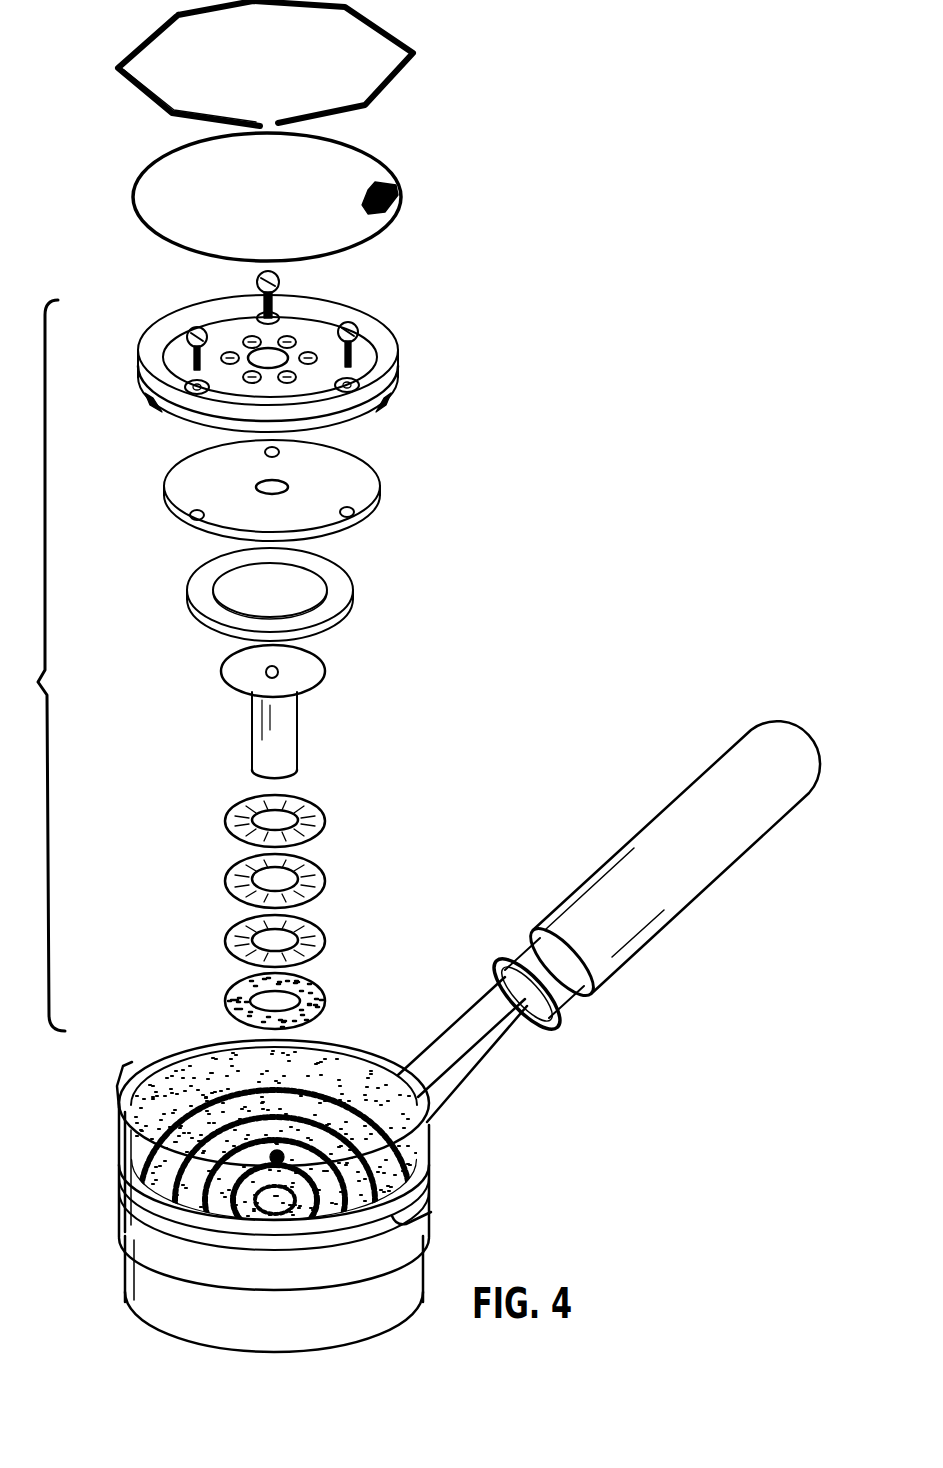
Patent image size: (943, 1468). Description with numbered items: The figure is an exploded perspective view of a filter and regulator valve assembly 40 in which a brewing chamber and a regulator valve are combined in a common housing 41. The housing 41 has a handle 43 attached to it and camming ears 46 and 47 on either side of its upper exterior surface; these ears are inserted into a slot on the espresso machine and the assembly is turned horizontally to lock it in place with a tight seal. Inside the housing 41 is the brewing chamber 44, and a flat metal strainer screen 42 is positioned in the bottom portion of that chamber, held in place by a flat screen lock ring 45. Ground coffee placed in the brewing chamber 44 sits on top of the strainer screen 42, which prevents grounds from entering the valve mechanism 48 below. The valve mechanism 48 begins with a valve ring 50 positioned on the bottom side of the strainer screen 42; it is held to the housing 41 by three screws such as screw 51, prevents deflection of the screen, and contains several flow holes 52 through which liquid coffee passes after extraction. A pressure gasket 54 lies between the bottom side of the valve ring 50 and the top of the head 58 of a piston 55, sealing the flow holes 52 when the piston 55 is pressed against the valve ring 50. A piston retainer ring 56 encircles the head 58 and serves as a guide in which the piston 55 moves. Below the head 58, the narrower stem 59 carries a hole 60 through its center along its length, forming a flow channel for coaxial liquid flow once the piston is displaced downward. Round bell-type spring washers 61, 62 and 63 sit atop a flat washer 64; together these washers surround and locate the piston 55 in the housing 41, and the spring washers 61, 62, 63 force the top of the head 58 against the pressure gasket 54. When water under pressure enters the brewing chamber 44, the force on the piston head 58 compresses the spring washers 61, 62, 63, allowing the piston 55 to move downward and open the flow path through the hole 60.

The filter and regulator valve assembly 40 is at (555, 388).
The housing 41 is at (280, 1180).
The flat metal strainer screen 42 is at (393, 192).
The handle 43 is at (700, 797).
The brewing chamber 44 is at (335, 1084).
The flat screen lock ring 45 is at (410, 52).
The camming ear 46 is at (433, 1177).
The camming ear 47 is at (126, 1093).
The valve mechanism 48 is at (232, 639).
The valve ring 50 is at (300, 340).
The screw 51 is at (279, 275).
The flow holes 52 is at (295, 338).
The pressure gasket 54 is at (360, 477).
The piston 55 is at (293, 700).
The piston retainer ring 56 is at (345, 585).
The head 58 is at (304, 660).
The stem 59 is at (265, 743).
The hole 60 is at (278, 668).
The spring washer 61 is at (317, 815).
The spring washer 62 is at (318, 873).
The spring washer 63 is at (315, 928).
The flat washer 64 is at (317, 983).